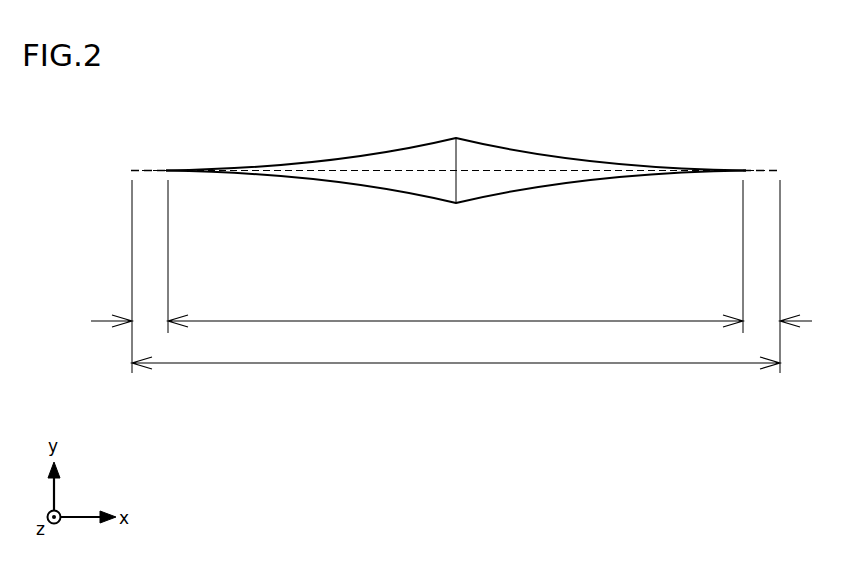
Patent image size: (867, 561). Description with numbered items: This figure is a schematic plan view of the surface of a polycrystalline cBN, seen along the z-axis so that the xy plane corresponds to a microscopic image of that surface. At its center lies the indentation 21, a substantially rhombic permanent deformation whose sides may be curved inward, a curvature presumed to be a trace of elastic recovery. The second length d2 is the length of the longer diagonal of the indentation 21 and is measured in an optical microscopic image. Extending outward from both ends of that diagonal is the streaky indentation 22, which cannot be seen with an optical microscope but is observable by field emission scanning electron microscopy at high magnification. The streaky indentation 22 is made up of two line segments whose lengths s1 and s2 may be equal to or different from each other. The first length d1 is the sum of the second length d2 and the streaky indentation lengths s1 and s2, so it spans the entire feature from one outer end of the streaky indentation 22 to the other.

The indentation 21 is at (492, 163).
The streaky indentation 22 is at (150, 171).
The length of line segment of streaky indentation s1 is at (126, 311).
The length of line segment of streaky indentation s2 is at (782, 311).
The first length d1 is at (456, 353).
The second length d2 is at (455, 311).